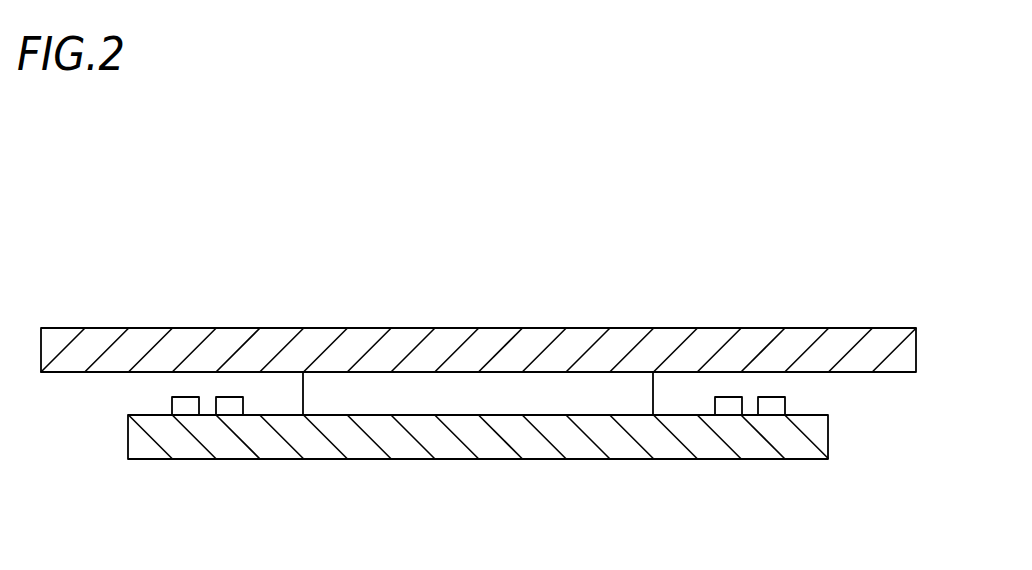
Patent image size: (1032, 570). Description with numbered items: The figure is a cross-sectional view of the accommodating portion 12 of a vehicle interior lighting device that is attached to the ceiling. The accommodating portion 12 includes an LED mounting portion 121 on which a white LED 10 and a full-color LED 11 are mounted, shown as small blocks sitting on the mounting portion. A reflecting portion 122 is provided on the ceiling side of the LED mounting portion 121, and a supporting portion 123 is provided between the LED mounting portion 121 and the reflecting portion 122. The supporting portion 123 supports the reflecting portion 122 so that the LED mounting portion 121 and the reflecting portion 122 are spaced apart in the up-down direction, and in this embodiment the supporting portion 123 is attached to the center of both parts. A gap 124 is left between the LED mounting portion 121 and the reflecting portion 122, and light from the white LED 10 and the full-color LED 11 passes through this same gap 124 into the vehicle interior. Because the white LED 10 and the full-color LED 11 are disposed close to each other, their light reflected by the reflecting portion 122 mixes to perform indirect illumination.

The white LED 10 is at (187, 395).
The full-color LED 11 is at (223, 415).
The accommodating portion 12 is at (487, 394).
The LED mounting portion 121 is at (488, 450).
The reflecting portion 122 is at (518, 347).
The supporting portion 123 is at (355, 388).
The gap 124 is at (836, 397).